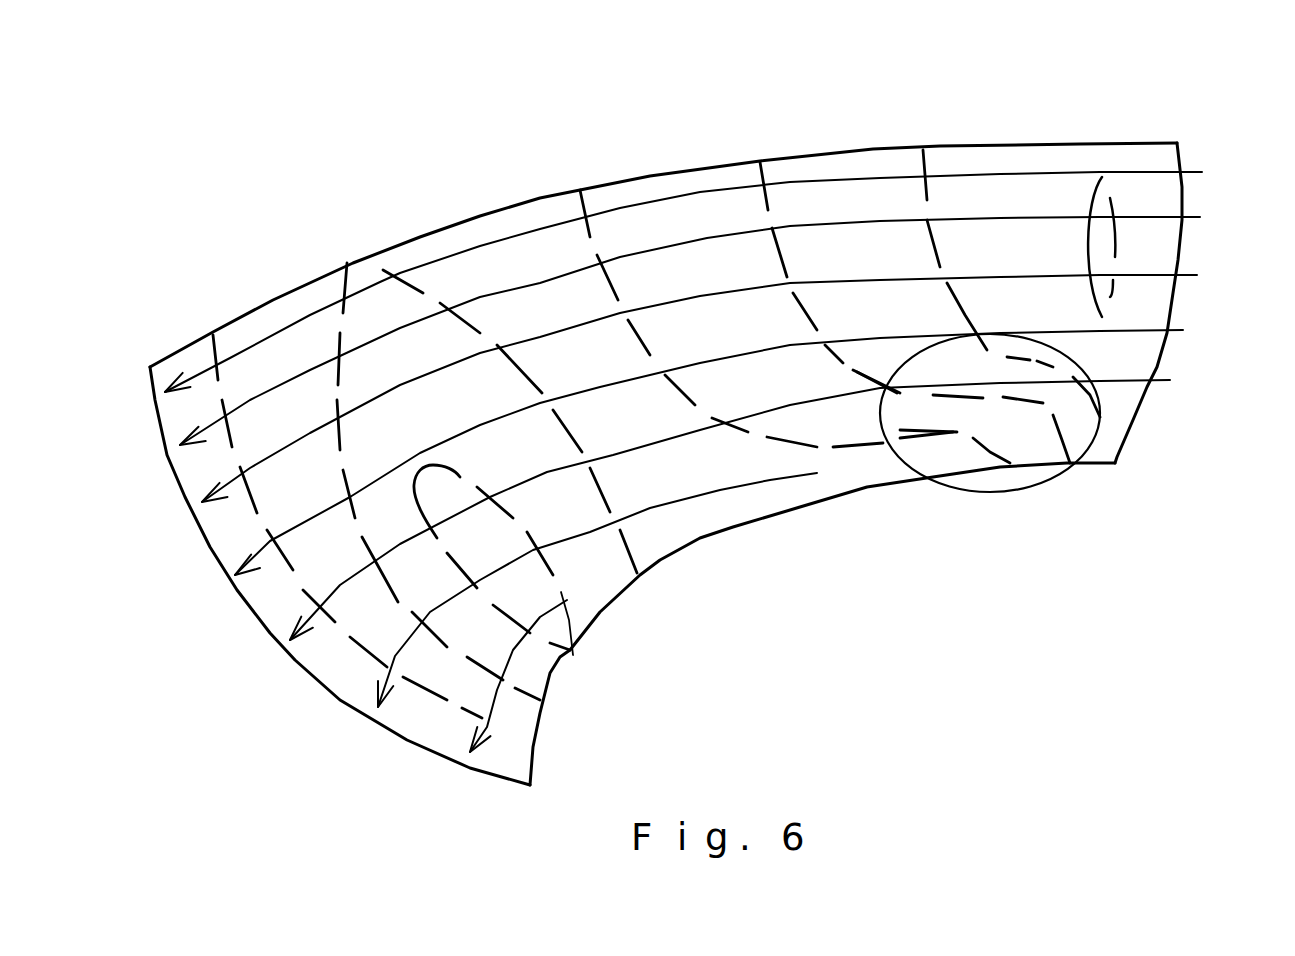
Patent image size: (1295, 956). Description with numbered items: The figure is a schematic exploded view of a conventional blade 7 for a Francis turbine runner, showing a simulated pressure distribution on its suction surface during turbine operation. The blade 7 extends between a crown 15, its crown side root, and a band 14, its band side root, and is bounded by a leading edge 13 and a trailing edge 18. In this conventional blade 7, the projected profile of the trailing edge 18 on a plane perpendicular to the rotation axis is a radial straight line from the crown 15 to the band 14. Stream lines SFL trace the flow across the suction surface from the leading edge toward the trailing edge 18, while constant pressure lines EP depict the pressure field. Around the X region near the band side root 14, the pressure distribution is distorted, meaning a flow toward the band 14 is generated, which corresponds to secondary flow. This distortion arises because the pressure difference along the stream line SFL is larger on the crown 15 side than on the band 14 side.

The blade 7 is at (683, 437).
The leading edge 13 is at (1201, 303).
The band 14 is at (822, 624).
The crown 15 is at (663, 212).
The trailing edge 18 is at (340, 576).
The stream line SFL is at (754, 252).
The constant pressure line EP is at (430, 297).
The X region X is at (978, 465).